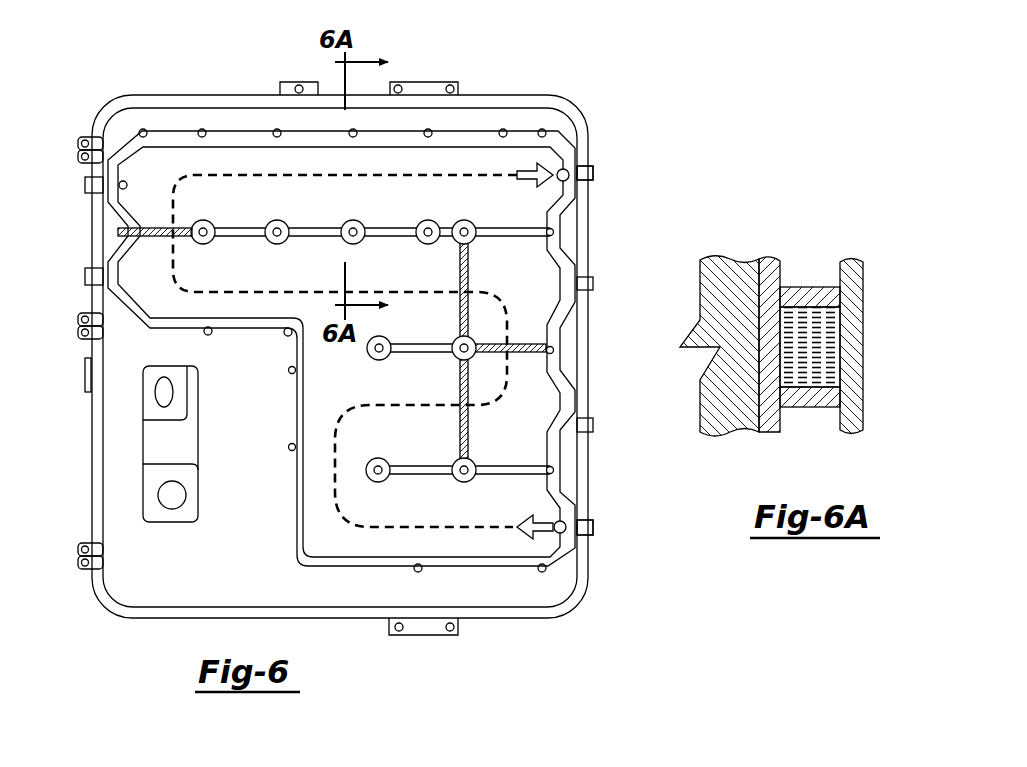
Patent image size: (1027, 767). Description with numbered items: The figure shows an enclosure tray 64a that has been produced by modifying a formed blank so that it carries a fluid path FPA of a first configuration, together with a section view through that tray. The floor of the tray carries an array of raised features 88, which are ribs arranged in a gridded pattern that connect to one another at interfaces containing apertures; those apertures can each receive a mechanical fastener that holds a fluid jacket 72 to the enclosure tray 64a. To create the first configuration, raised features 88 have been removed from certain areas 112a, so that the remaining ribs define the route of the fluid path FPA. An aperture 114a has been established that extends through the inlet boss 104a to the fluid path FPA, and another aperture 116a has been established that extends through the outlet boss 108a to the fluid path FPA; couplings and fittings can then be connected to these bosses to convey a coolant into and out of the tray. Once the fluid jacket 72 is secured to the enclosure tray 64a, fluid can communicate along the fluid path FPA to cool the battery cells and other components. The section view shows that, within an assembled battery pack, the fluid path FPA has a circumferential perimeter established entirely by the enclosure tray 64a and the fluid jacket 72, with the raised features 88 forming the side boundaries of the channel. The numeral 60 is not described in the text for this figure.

In FIG. 6, the enclosure tray 64a is at (549, 80).
In FIG. 6A, the enclosure tray 64a is at (781, 421).
In FIG. 6A, the housing body 60 is at (729, 282).
In FIG. 6A, the fluid jacket 72 is at (864, 392).
In FIG. 6, the raised features 88 is at (421, 225).
In FIG. 6A, the raised features 88 is at (820, 405).
In FIG. 6, the areas 112a is at (148, 225).
In FIG. 6, the aperture 116a is at (565, 169).
In FIG. 6, the outlet boss 108a is at (593, 173).
In FIG. 6, the inlet boss 104a is at (593, 527).
In FIG. 6, the aperture 114a is at (562, 533).
In FIG. 6, the fluid path FPA is at (462, 517).
In FIG. 6A, the fluid path FPA is at (843, 336).